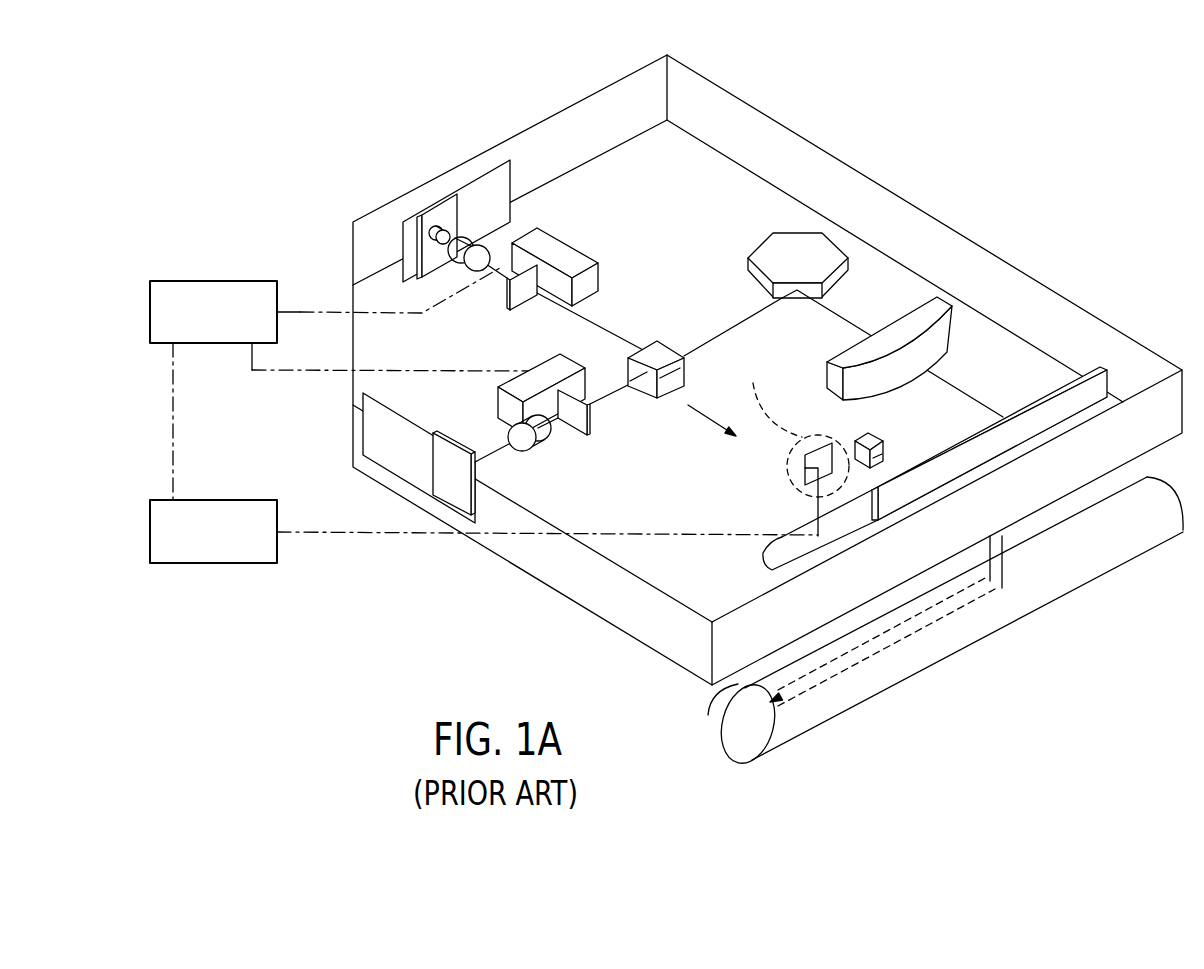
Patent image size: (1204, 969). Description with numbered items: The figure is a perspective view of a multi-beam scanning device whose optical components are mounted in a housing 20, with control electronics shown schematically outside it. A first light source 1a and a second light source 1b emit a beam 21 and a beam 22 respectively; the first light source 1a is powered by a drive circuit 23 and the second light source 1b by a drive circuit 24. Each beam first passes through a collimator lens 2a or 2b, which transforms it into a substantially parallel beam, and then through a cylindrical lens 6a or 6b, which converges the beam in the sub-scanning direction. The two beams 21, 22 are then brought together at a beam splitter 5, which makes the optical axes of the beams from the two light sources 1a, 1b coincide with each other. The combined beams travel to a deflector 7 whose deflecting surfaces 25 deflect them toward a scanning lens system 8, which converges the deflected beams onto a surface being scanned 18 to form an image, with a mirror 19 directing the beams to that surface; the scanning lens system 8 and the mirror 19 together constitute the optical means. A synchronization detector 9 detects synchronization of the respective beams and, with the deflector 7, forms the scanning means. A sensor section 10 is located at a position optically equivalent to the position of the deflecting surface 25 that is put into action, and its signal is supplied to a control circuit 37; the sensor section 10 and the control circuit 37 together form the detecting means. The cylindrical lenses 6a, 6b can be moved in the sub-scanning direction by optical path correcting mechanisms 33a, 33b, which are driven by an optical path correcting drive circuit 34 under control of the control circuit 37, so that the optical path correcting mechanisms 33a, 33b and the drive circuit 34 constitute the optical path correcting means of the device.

The first light source 1a is at (444, 443).
The second light source 1b is at (442, 213).
The collimator lens 2a is at (541, 445).
The collimator lens 2b is at (462, 242).
The beam splitter 5 is at (659, 346).
The cylindrical lens 6a is at (573, 430).
The cylindrical lens 6b is at (507, 302).
The deflector 7 is at (775, 252).
The scanning lens system 8 is at (907, 327).
The synchronization detector 9 is at (885, 448).
The sensor section 10 is at (803, 485).
The surface being scanned 18 is at (1120, 544).
The mirror 19 is at (1052, 413).
The housing 20 is at (793, 145).
The beam 21 is at (617, 392).
The beam 22 is at (610, 337).
The drive circuit 23 is at (400, 417).
The drive circuit 24 is at (495, 180).
The deflecting surfaces 25 is at (785, 287).
The optical path correcting mechanism 33a is at (560, 252).
The optical path correcting mechanism 33b is at (555, 366).
The optical path correcting drive circuit 34 is at (205, 300).
The control circuit 37 is at (202, 553).